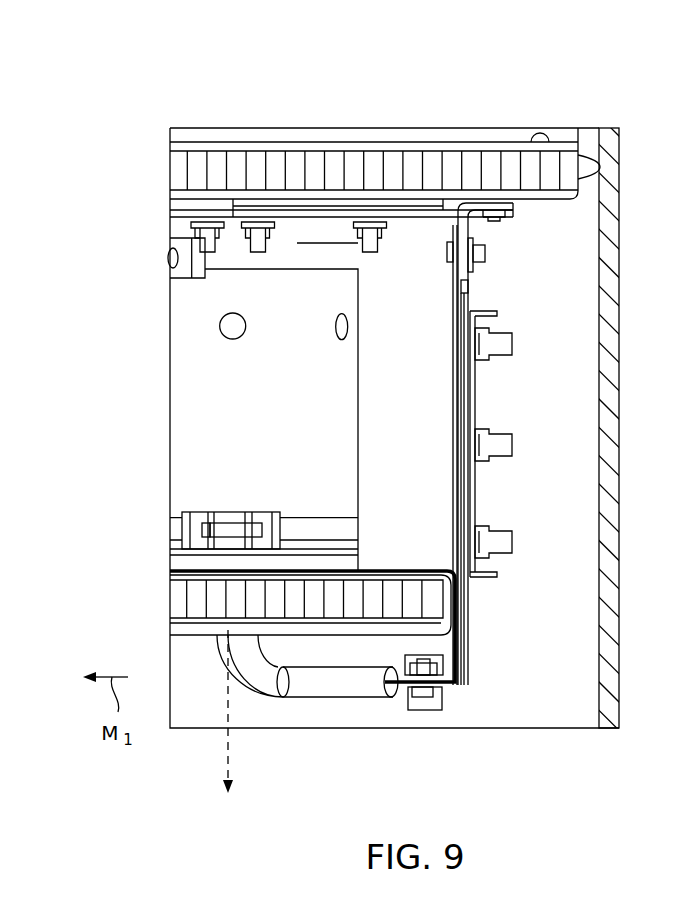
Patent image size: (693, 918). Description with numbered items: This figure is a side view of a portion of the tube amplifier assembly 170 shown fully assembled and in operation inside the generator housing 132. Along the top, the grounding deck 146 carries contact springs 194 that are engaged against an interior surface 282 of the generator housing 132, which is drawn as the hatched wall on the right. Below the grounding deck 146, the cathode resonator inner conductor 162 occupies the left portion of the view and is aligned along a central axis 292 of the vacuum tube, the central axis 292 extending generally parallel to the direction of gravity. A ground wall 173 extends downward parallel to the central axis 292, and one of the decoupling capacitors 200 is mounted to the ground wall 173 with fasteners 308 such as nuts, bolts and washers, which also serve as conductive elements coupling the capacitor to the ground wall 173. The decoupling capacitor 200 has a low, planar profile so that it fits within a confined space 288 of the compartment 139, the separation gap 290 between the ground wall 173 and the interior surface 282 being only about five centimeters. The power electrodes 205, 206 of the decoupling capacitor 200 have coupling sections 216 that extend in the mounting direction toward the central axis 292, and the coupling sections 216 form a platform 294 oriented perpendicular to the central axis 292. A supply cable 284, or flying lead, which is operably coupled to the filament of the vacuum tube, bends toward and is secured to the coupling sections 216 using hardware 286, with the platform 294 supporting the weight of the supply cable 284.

The generator housing 132 is at (608, 267).
The compartment 139 is at (565, 362).
The grounding deck 146 is at (389, 128).
The cathode resonator inner conductor 162 is at (213, 410).
The tube amplifier assembly 170 is at (573, 236).
The ground wall 173 is at (452, 427).
The contact springs 194 is at (592, 152).
The decoupling capacitor 200 is at (507, 404).
The power electrode 205 is at (460, 602).
The power electrode 206 is at (470, 625).
The coupling sections 216 is at (390, 652).
The interior surface 282 is at (585, 481).
The supply cable 284 is at (274, 721).
The hardware 286 is at (428, 731).
The confined space 288 is at (532, 742).
The separation gap 290 is at (467, 693).
The central axis 292 is at (227, 755).
The platform 294 is at (389, 703).
The fasteners 308 is at (504, 320).